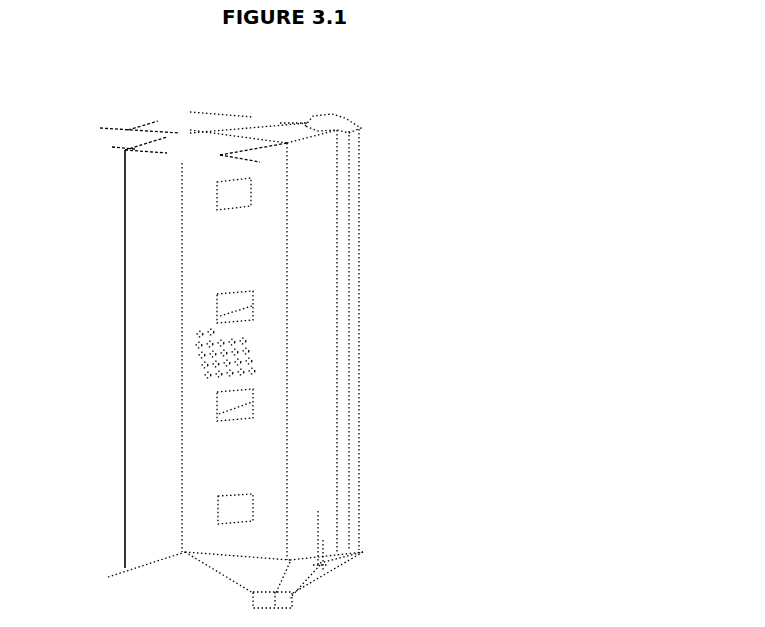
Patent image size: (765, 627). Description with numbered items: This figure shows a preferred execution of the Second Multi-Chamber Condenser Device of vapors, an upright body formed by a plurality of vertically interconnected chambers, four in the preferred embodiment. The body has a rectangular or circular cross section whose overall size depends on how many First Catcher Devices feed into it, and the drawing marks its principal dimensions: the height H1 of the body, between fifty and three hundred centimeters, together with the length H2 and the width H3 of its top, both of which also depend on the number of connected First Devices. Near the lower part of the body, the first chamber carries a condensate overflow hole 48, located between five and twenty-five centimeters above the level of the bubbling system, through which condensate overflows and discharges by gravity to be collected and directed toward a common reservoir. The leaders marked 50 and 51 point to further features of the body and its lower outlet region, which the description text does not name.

The tower housing 50 is at (349, 374).
The condensate overflow hole 48 is at (321, 508).
The drain tube 51 is at (327, 538).
The height H1 is at (120, 359).
The length H2 is at (199, 149).
The width H3 is at (140, 115).